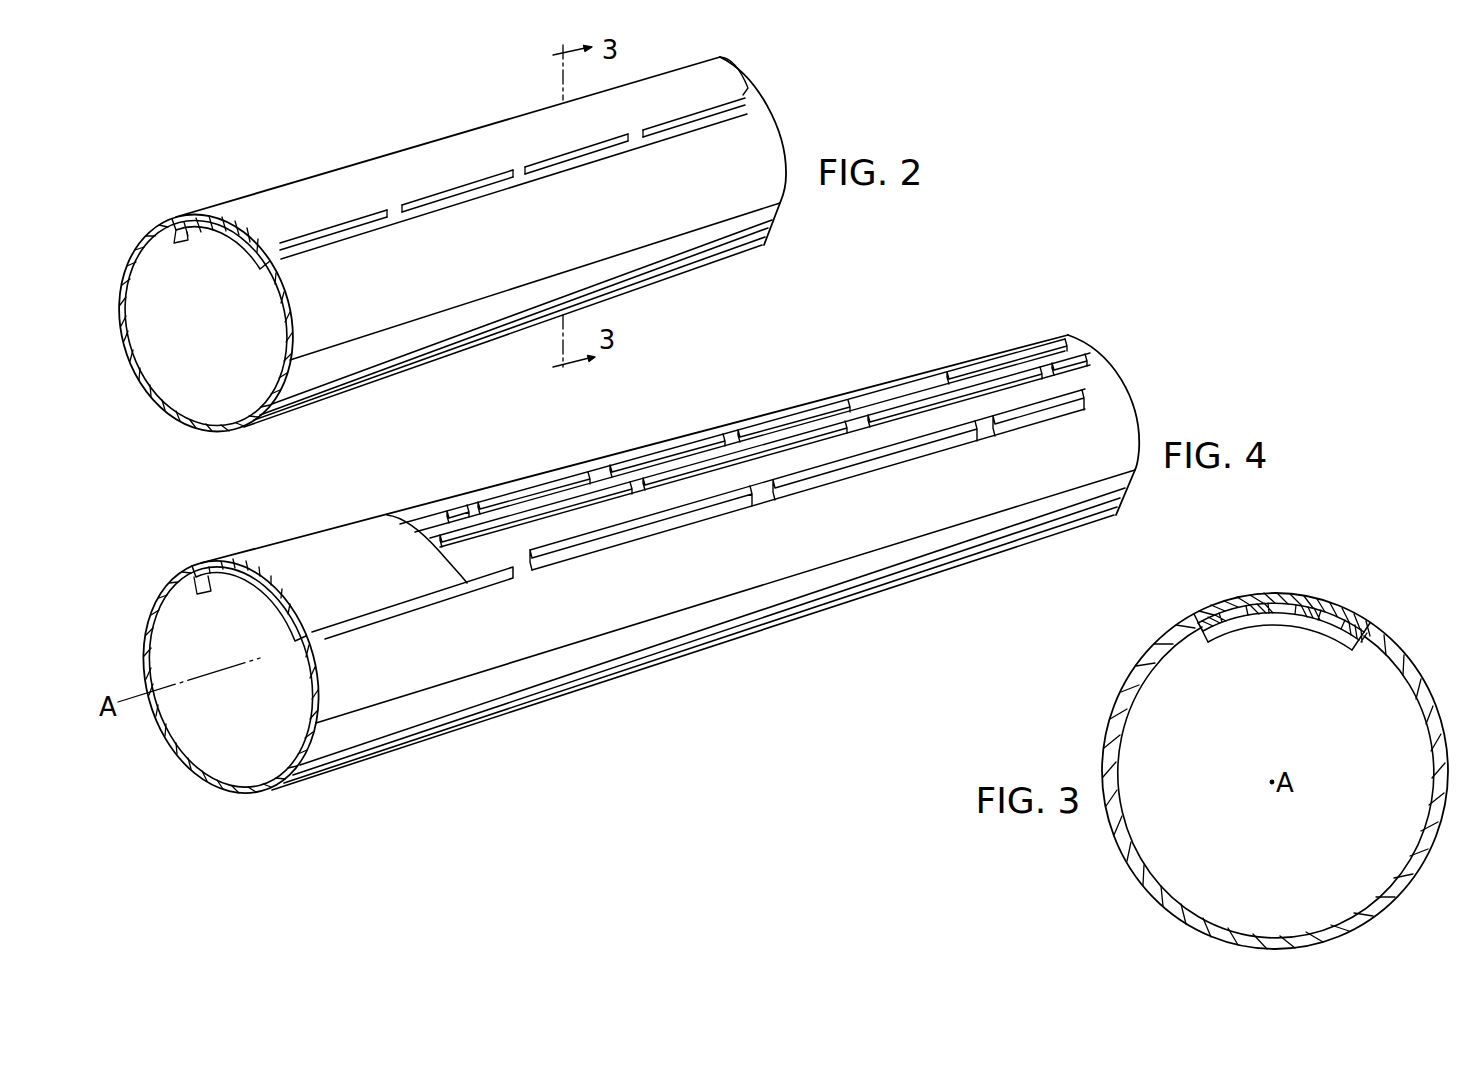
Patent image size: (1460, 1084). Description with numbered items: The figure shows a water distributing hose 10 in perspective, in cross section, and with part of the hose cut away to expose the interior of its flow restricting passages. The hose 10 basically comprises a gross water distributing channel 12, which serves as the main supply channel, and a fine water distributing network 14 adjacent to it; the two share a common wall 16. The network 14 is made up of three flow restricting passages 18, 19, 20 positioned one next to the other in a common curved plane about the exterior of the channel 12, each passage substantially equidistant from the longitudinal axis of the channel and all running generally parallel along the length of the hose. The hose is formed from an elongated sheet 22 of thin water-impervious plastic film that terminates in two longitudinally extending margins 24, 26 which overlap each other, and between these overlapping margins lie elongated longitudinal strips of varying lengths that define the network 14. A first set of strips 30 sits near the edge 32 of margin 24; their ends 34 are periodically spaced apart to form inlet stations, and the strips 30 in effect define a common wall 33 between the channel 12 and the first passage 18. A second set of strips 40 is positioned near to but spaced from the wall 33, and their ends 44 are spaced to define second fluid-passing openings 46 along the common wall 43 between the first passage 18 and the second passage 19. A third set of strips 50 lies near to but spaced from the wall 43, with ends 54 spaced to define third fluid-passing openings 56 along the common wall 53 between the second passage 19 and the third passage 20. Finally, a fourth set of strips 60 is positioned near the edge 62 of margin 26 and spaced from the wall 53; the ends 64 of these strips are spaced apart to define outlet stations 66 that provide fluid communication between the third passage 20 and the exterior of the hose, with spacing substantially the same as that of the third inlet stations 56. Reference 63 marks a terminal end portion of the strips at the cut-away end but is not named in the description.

In FIG. 2, the water distributing hose 10 is at (696, 320).
In FIG. 4, the water distributing hose 10 is at (732, 374).
In FIG. 2, the gross water distributing channel 12 is at (180, 352).
In FIG. 4, the gross water distributing channel 12 is at (226, 727).
In FIG. 3, the gross water distributing channel 12 is at (1265, 857).
In FIG. 3, the fine water distributing network 14 is at (1300, 574).
In FIG. 4, the common wall 16 is at (257, 590).
In FIG. 3, the common wall 16 is at (1293, 627).
In FIG. 4, the first flow-restricting passage 18 is at (225, 578).
In FIG. 3, the first flow-restricting passage 18 is at (1232, 612).
In FIG. 4, the second flow-restricting passage 19 is at (262, 570).
In FIG. 3, the second flow-restricting passage 19 is at (1300, 603).
In FIG. 4, the third flow-restricting passage 20 is at (295, 614).
In FIG. 3, the third flow-restricting passage 20 is at (1337, 620).
In FIG. 2, the elongated layer or sheet 22 is at (368, 350).
In FIG. 4, the elongated layer or sheet 22 is at (481, 687).
In FIG. 2, the margin 24 is at (240, 244).
In FIG. 3, the margin 24 is at (1255, 625).
In FIG. 2, the margin 26 is at (257, 216).
In FIG. 3, the margin 26 is at (1259, 602).
In FIG. 4, the first set of strips 30 is at (478, 496).
In FIG. 3, the edge of margin 24 32 is at (1200, 642).
In FIG. 4, the common wall 33 is at (196, 576).
In FIG. 3, the common wall 33 is at (1202, 628).
In FIG. 4, the ends of the strips 34 is at (612, 462).
In FIG. 4, the second set of strips 40 is at (533, 488).
In FIG. 4, the common wall 43 is at (247, 558).
In FIG. 4, the ends of the strips 44 is at (465, 503).
In FIG. 4, the second fluid-passing openings or inlet stations 46 is at (726, 434).
In FIG. 4, the third set of strips 50 is at (770, 448).
In FIG. 4, the common wall 53 is at (290, 580).
In FIG. 4, the ends of the strips 54 is at (633, 482).
In FIG. 4, the third fluid-passing openings or inlet stations 56 is at (860, 420).
In FIG. 2, the fourth set of strips 60 is at (347, 237).
In FIG. 4, the fourth set of strips 60 is at (634, 527).
In FIG. 3, the edge of margin 26 62 is at (1370, 633).
In FIG. 4, the terminal end 63 is at (318, 607).
In FIG. 4, the ends of the strips 64 is at (513, 565).
In FIG. 2, the fluid discharge openings or outlet stations 66 is at (394, 219).
In FIG. 4, the fluid discharge openings or outlet stations 66 is at (767, 492).